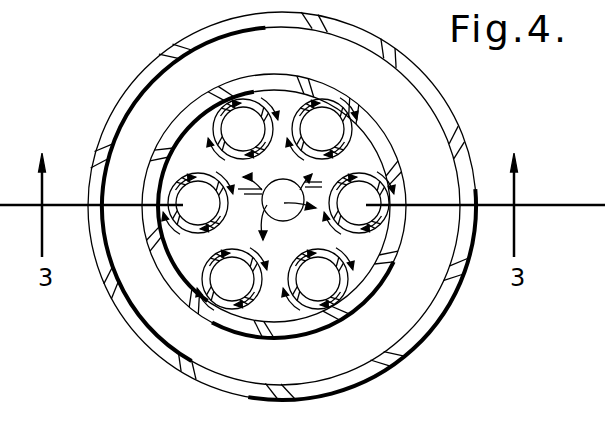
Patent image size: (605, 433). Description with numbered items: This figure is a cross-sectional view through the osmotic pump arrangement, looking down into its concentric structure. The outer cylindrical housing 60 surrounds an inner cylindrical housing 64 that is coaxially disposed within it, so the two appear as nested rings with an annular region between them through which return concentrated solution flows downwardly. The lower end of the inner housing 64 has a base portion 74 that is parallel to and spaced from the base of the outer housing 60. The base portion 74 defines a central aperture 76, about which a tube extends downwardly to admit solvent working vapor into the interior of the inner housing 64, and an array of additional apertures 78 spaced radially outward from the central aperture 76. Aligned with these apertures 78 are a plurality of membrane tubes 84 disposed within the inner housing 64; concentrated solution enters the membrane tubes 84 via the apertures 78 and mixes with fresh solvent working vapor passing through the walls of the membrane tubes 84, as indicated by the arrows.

The outer cylindrical housing 60 is at (119, 102).
The inner cylindrical housing 64 is at (194, 101).
The base portion 74 is at (285, 97).
The central aperture 76 is at (262, 203).
The additional apertures 78 is at (345, 220).
The membrane tubes 84 is at (178, 218).